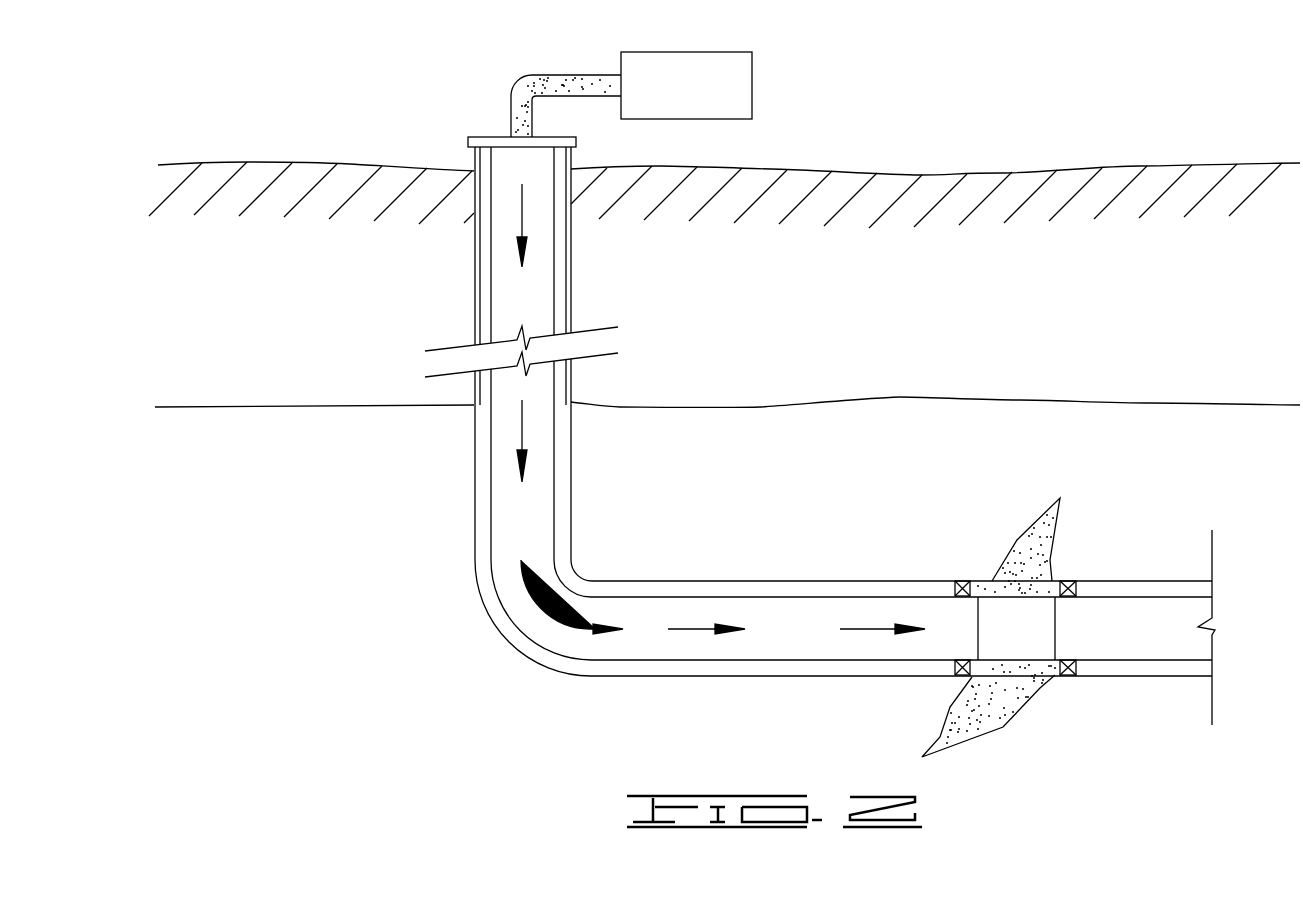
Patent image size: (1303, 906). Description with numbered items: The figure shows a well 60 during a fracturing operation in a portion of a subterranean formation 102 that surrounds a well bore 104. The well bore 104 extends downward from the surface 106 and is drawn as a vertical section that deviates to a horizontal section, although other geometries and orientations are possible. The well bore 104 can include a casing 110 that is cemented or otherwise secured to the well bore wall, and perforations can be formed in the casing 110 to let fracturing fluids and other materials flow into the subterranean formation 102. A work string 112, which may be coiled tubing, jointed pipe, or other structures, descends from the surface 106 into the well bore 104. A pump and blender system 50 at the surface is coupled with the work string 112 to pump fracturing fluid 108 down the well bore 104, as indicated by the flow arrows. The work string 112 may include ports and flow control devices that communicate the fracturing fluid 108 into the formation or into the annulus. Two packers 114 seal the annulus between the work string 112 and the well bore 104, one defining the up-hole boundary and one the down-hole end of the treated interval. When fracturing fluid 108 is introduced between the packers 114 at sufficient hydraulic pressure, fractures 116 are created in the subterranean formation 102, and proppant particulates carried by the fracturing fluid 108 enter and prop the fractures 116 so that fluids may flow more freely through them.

The pump and blender system 50 is at (696, 97).
The well 60 is at (795, 431).
The subterranean formation 102 is at (913, 441).
The well bore 104 is at (482, 286).
The surface 106 is at (1140, 168).
The fracturing fluid 108 is at (522, 78).
The casing 110 is at (477, 327).
The work string 112 is at (489, 505).
The packers 114 is at (963, 580).
The fractures 116 is at (1005, 522).